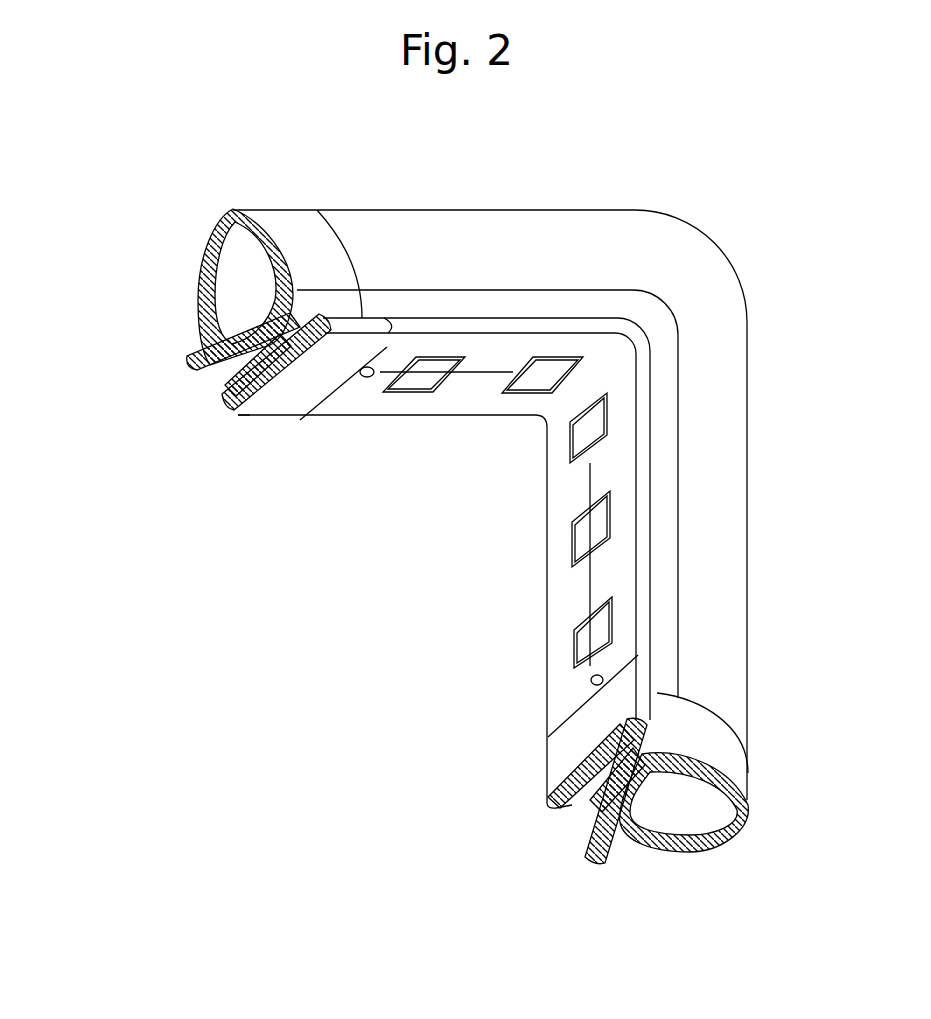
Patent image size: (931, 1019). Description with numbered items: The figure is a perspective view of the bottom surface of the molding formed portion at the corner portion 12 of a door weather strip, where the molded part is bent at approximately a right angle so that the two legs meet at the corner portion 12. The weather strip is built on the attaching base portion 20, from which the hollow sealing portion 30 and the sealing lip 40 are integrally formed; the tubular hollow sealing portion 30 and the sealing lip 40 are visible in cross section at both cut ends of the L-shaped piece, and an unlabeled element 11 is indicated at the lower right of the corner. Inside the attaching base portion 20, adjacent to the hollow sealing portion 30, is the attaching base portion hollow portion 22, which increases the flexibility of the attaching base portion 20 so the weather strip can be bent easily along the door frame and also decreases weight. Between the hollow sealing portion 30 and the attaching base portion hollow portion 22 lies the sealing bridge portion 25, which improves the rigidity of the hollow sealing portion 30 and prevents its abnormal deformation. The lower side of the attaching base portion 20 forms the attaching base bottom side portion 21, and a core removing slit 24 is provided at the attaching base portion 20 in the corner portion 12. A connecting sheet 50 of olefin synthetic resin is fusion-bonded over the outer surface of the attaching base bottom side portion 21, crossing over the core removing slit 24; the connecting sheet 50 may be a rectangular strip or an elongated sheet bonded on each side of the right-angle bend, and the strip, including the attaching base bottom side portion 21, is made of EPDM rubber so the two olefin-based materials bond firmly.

The weather strip 11 is at (737, 767).
The corner portion 12 is at (685, 265).
The attaching base portion 20 is at (297, 400).
The attaching base bottom side portion 21 is at (237, 420).
The attaching base portion hollow portion 22 is at (223, 372).
The core removing slit 24 is at (487, 375).
The sealing bridge portion 25 is at (248, 326).
The hollow sealing portion 30 is at (226, 212).
The sealing lip 40 is at (190, 363).
The connecting sheet 50 is at (435, 375).